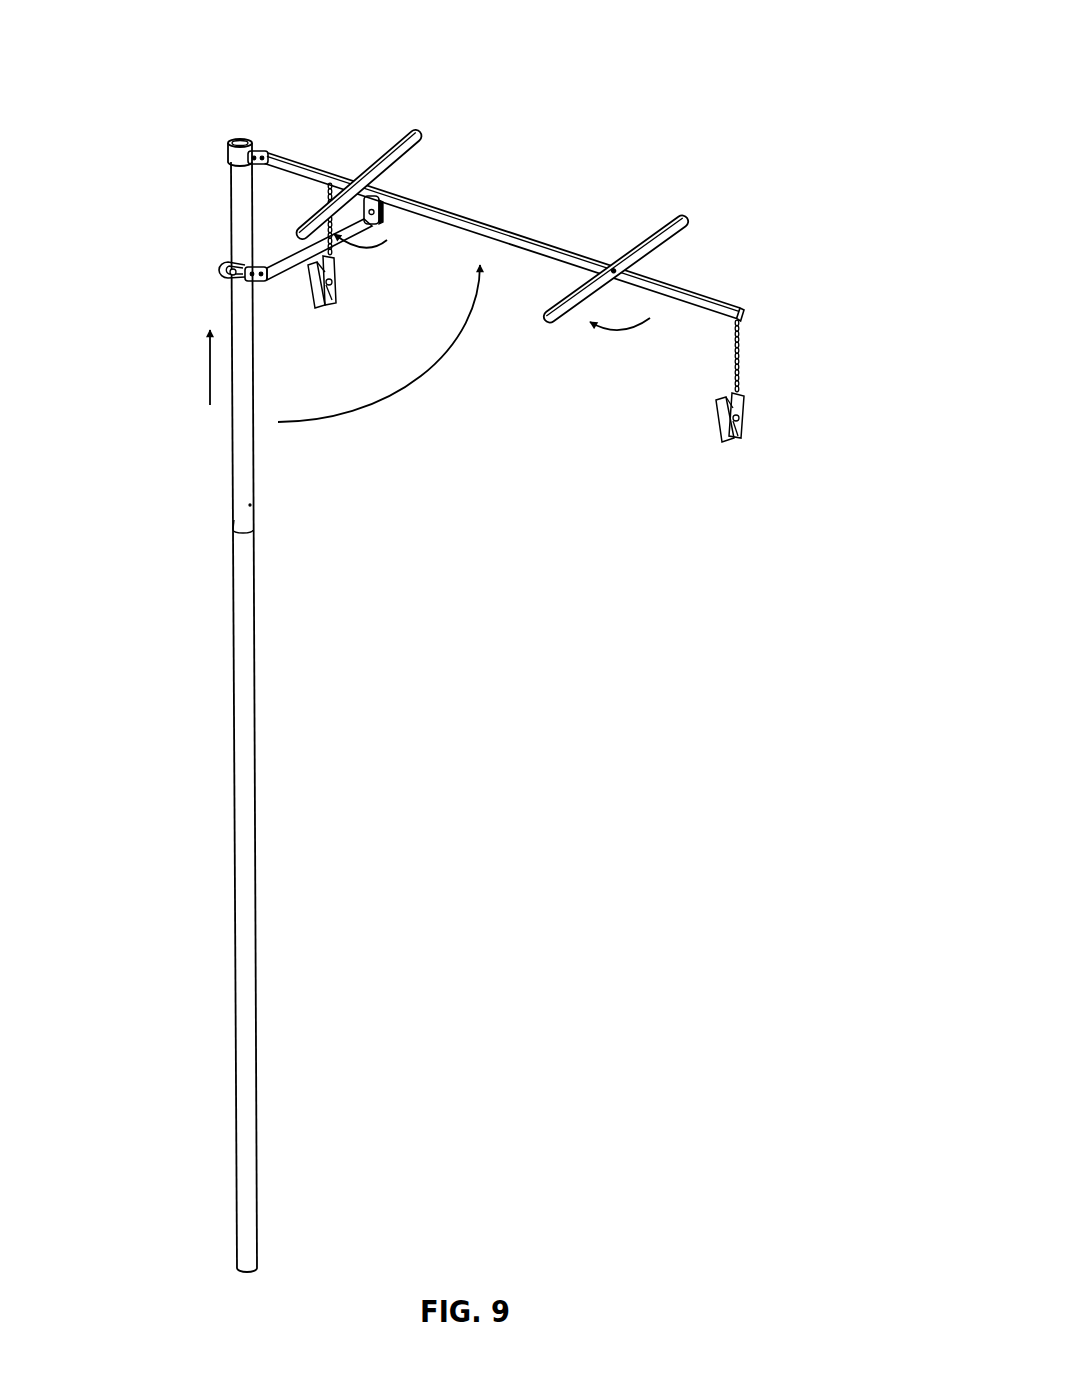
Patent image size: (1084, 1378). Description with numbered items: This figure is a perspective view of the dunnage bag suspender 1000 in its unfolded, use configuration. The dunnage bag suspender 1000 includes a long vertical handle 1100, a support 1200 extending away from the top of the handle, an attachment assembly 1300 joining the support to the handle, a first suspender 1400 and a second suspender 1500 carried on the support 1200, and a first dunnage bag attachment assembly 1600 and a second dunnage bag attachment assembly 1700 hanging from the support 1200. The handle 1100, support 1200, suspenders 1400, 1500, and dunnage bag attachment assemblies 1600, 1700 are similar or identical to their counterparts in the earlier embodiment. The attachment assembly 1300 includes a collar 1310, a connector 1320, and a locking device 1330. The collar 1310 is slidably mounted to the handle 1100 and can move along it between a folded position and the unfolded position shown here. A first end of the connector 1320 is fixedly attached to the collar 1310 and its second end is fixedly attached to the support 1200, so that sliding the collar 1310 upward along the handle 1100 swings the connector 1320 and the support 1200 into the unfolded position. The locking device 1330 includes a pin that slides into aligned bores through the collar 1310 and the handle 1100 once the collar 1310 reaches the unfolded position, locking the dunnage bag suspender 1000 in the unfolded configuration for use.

The dunnage bag suspender 1000 is at (689, 56).
The handle 1100 is at (227, 632).
The support 1200 is at (516, 230).
The attachment assembly 1300 is at (204, 286).
The collar 1310 is at (223, 258).
The connector 1320 is at (280, 253).
The locking device 1330 is at (236, 276).
The first suspender 1400 is at (421, 133).
The second suspender 1500 is at (688, 217).
The first dunnage bag attachment assembly 1600 is at (340, 275).
The second dunnage bag attachment assembly 1700 is at (758, 361).